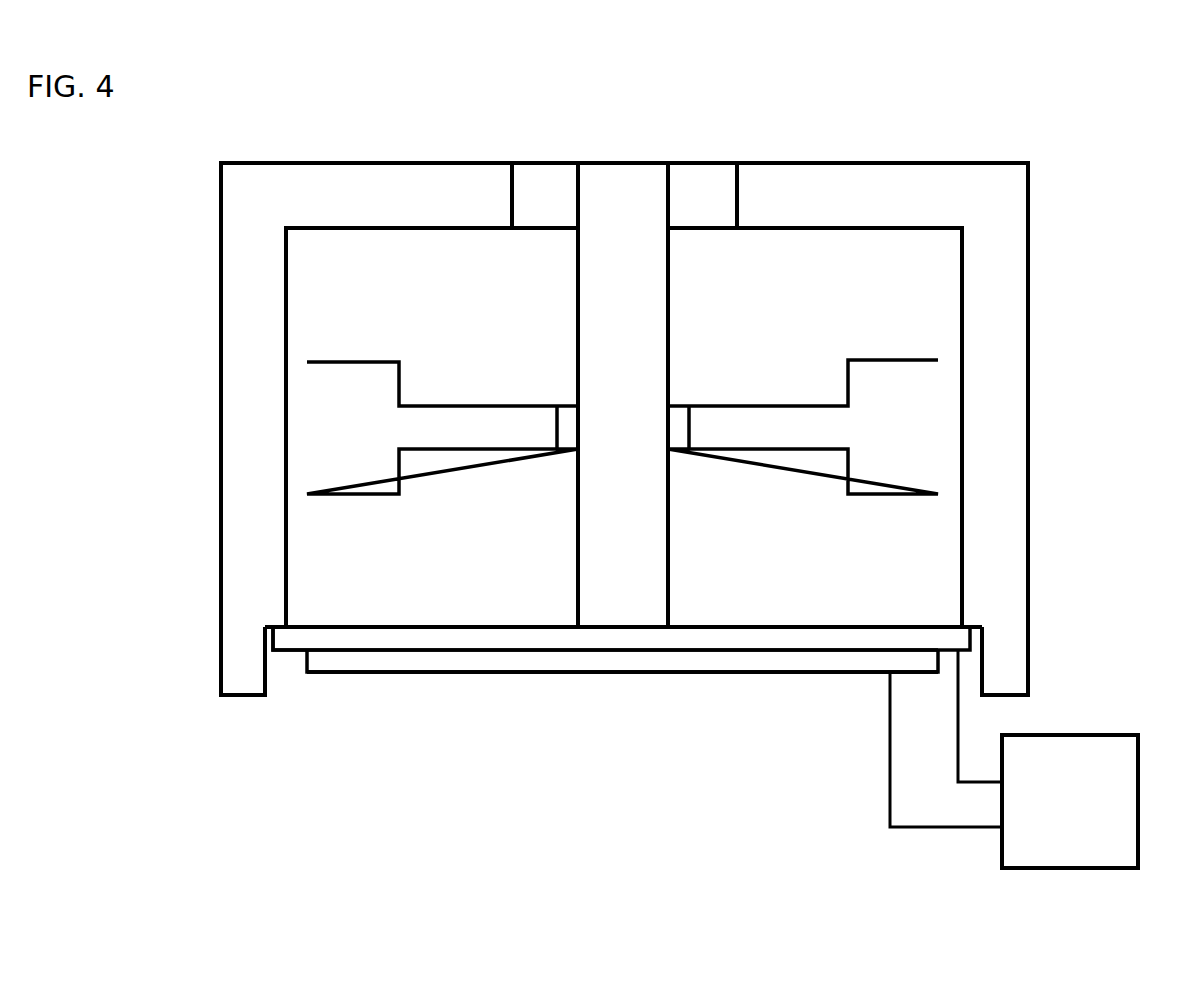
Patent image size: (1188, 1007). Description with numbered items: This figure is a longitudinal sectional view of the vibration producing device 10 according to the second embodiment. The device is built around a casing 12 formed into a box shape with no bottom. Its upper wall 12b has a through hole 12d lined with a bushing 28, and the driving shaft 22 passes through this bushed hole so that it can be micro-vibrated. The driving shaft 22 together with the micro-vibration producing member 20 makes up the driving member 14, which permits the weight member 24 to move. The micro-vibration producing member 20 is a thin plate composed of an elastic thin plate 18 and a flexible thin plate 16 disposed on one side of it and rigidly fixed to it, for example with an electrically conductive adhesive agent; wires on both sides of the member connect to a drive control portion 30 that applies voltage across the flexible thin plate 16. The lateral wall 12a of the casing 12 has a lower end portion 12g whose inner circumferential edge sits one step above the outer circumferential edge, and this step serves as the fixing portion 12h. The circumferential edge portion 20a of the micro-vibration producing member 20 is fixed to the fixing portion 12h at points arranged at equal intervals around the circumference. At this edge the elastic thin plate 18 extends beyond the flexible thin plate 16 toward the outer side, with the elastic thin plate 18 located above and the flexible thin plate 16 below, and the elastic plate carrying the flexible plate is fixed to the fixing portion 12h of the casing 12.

The vibration producing device 10 is at (300, 138).
The casing 12 is at (982, 183).
The lateral wall 12a is at (1002, 307).
The upper wall 12b is at (802, 190).
The through hole 12d is at (540, 177).
The lower end portion 12g is at (239, 664).
The fixing portion 12h is at (271, 628).
The driving member 14 is at (543, 692).
The flexible thin plate 16 is at (347, 662).
The elastic thin plate 18 is at (407, 640).
The micro-vibration producing member 20 is at (420, 762).
The circumferential edge portion 20a is at (284, 641).
The driving shaft 22 is at (597, 317).
The weight member 24 is at (325, 428).
The bushing 28 is at (690, 177).
The drive control portion 30 is at (1063, 752).